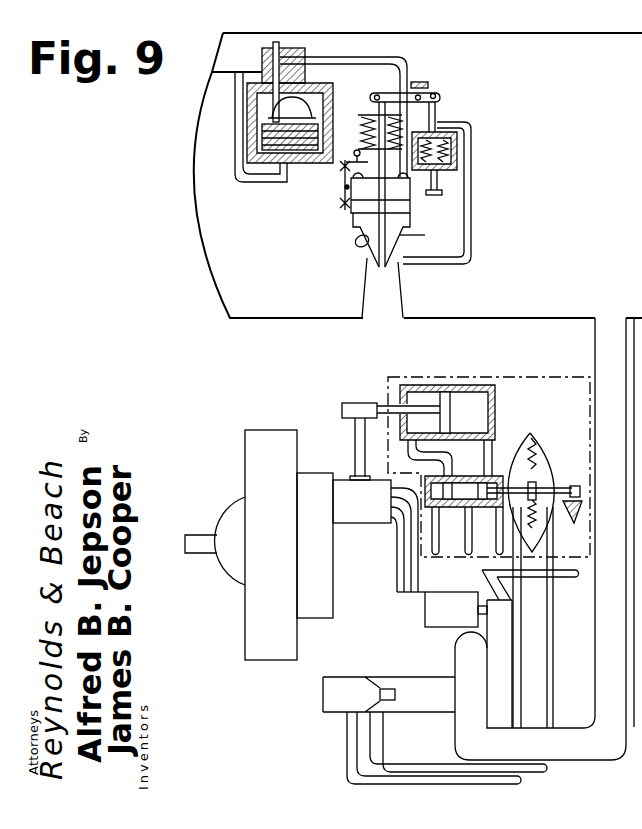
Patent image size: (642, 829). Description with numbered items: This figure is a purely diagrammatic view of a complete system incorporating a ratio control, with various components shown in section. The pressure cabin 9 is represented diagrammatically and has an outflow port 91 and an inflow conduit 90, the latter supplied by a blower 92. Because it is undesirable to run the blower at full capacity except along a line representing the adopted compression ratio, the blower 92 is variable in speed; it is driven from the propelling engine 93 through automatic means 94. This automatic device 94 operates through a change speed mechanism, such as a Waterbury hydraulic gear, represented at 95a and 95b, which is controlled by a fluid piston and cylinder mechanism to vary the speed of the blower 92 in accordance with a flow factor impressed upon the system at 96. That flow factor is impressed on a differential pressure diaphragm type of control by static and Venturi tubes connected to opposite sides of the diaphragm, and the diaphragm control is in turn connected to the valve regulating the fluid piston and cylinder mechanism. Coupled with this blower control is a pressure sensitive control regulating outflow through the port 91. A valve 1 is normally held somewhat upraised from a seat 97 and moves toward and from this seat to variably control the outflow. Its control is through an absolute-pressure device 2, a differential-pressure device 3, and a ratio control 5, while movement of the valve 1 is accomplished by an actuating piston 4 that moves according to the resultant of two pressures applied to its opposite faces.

The pressure cabin 9 is at (323, 320).
The ratio control 5 is at (236, 135).
The differential-pressure device 3 is at (368, 121).
The absolute-pressure device 2 is at (470, 127).
The actuating piston 4 is at (347, 187).
The valve 1 is at (363, 221).
The seat 97 is at (358, 243).
The outflow port 91 is at (384, 304).
The automatic means 94 is at (483, 377).
The inflow conduit 90 is at (596, 342).
The propelling engine 93 is at (232, 507).
The change speed mechanism 95a is at (377, 513).
The change speed mechanism 95b is at (400, 627).
The blower 92 is at (463, 665).
The flow factor 96 is at (383, 693).